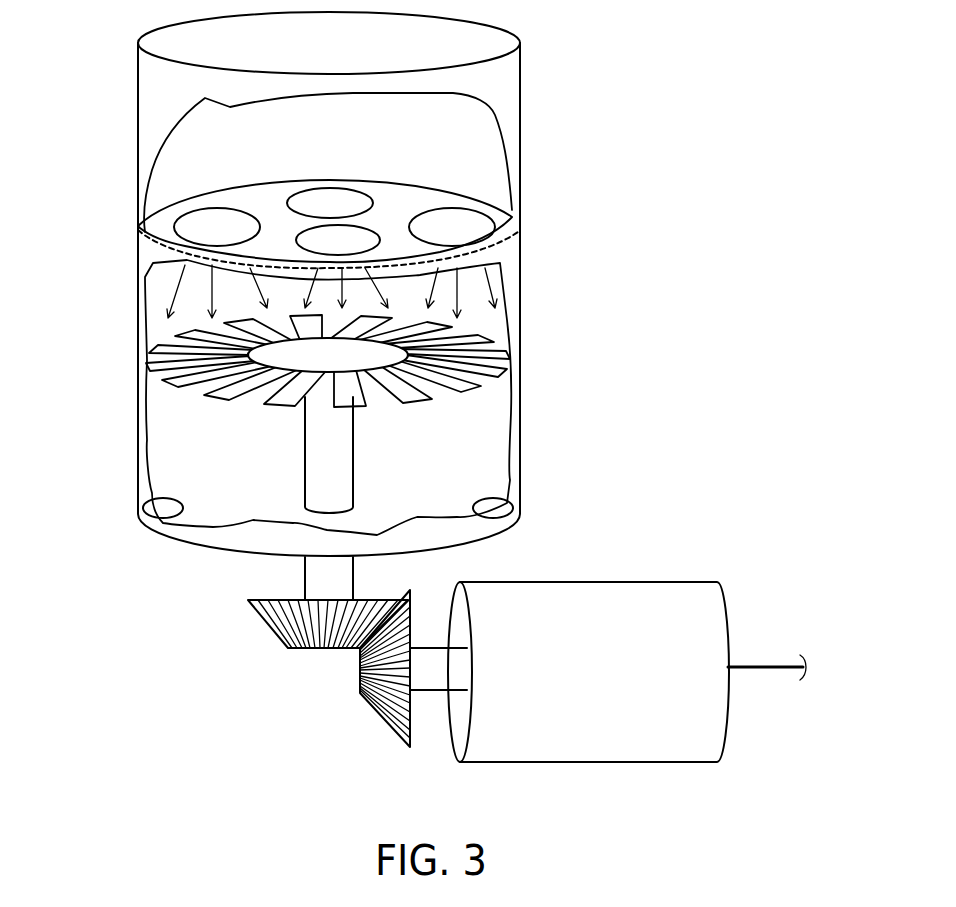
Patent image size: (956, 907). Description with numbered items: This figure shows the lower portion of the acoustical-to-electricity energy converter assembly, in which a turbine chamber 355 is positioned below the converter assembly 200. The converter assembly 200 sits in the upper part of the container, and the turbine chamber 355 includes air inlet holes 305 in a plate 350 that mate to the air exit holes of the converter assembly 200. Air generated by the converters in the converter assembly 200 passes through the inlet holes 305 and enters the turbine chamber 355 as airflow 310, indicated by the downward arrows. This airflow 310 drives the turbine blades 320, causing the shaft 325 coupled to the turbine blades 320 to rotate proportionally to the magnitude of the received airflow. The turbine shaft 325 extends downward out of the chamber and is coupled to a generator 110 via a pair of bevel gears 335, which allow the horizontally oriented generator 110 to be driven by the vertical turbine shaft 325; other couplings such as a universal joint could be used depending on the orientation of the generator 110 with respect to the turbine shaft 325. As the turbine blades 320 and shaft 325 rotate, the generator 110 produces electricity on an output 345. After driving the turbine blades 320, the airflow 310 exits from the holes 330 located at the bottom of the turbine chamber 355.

The converter assembly 200 is at (502, 103).
The perforated plate 350 is at (493, 197).
The air inlet holes 305 is at (173, 213).
The airflow 310 is at (167, 293).
The turbine chamber 355 is at (522, 305).
The turbine blades 320 is at (497, 397).
The turbine shaft 325 is at (360, 497).
The holes 330 is at (148, 500).
The bevel gears 335 is at (357, 677).
The generator 110 is at (675, 582).
The output 345 is at (766, 663).